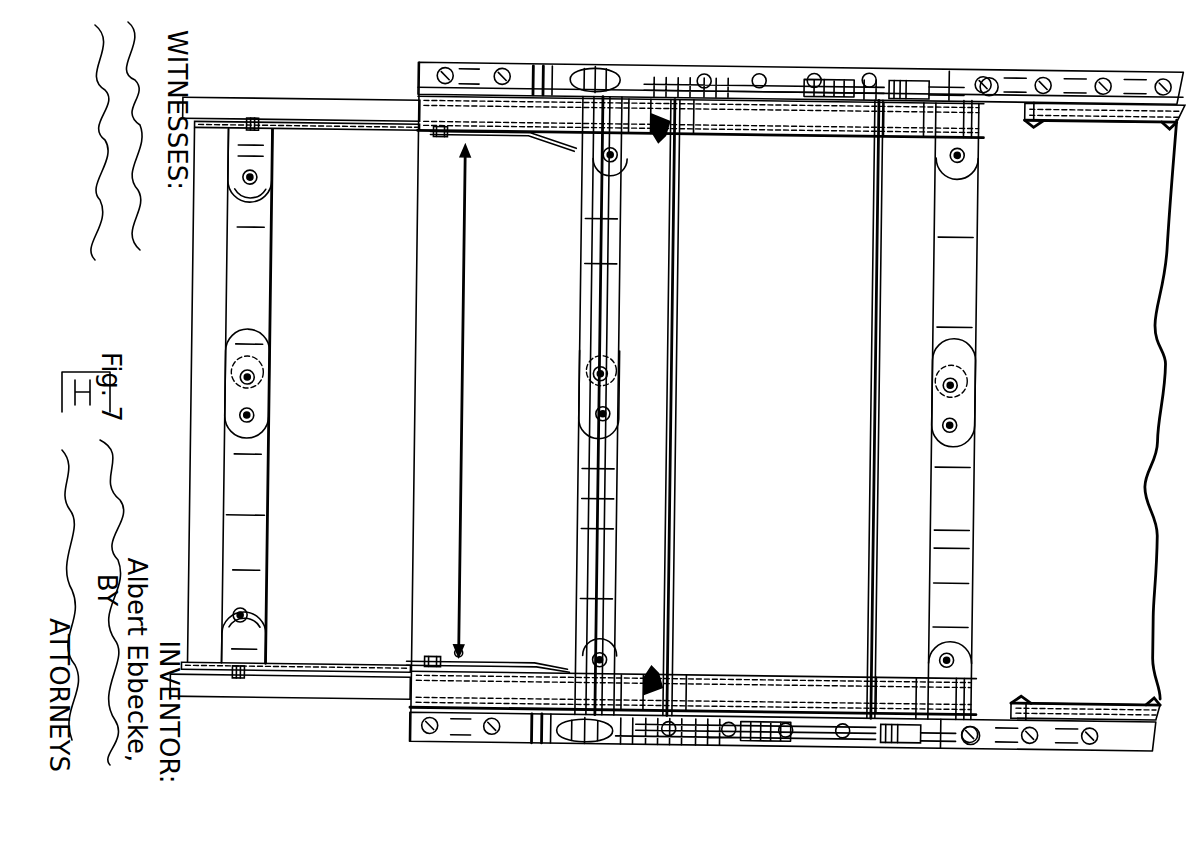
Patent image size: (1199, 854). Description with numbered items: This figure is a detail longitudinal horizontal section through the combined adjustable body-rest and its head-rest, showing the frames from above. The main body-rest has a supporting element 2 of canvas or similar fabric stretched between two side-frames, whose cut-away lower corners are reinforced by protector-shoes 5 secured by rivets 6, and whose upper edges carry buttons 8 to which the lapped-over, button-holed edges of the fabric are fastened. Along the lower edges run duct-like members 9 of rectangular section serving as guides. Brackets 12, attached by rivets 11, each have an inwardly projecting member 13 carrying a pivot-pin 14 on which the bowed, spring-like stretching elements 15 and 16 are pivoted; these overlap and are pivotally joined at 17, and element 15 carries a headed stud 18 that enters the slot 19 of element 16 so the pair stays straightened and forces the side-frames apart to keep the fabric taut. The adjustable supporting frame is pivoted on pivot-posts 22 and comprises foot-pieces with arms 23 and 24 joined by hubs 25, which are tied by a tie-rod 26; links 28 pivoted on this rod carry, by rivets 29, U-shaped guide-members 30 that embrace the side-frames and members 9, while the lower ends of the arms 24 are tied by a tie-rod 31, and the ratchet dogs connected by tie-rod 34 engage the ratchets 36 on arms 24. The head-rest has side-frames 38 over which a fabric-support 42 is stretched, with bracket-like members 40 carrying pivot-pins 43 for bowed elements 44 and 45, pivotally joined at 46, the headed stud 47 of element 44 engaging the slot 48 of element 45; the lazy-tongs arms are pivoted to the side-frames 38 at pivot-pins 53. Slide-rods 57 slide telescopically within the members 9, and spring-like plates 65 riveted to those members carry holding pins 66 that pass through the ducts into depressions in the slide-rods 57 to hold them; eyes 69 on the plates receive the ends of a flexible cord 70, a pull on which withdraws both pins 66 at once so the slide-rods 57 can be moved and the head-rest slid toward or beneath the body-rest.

The supporting element 2 is at (488, 70).
The protector-shoe 5 is at (1077, 114).
The rivet 6 is at (1030, 124).
The button 8 is at (455, 72).
The duct-like member 9 is at (420, 95).
The rivet 11 is at (548, 72).
The bracket 12 is at (522, 70).
The inwardly projecting member 13 is at (588, 140).
The pivot-pin 14 is at (616, 160).
The bowed element 15 is at (995, 543).
The bowed element 16 is at (583, 246).
The pivotal connection 17 is at (606, 420).
The headed stud 18 is at (605, 388).
The slot 19 is at (603, 378).
The pivot-post 22 is at (995, 80).
The arm 23 is at (958, 80).
The arm 24 is at (610, 72).
The hub 25 is at (905, 85).
The tie-rod 26 is at (872, 291).
The link 28 is at (770, 108).
The rivet 29 is at (642, 140).
The guide-member 30 is at (690, 132).
The tie-rod 31 is at (597, 322).
The tie-rod 34 is at (678, 291).
The ratchet 36 is at (738, 112).
The side-frame 38 is at (346, 128).
The bracket-like member 40 is at (270, 170).
The fabric-support 42 is at (193, 326).
The pivot-pin 43 is at (258, 188).
The bowed element 44 is at (246, 302).
The bowed element 45 is at (262, 512).
The pivotal connection 46 is at (256, 416).
The headed stud 47 is at (256, 372).
The slot 48 is at (258, 380).
The pivot-pin 53 is at (253, 118).
The slide-rod 57 is at (332, 105).
The spring-like plate 65 is at (512, 142).
The holding pin 66 is at (436, 132).
The eye 69 is at (466, 160).
The flexible cord 70 is at (465, 256).